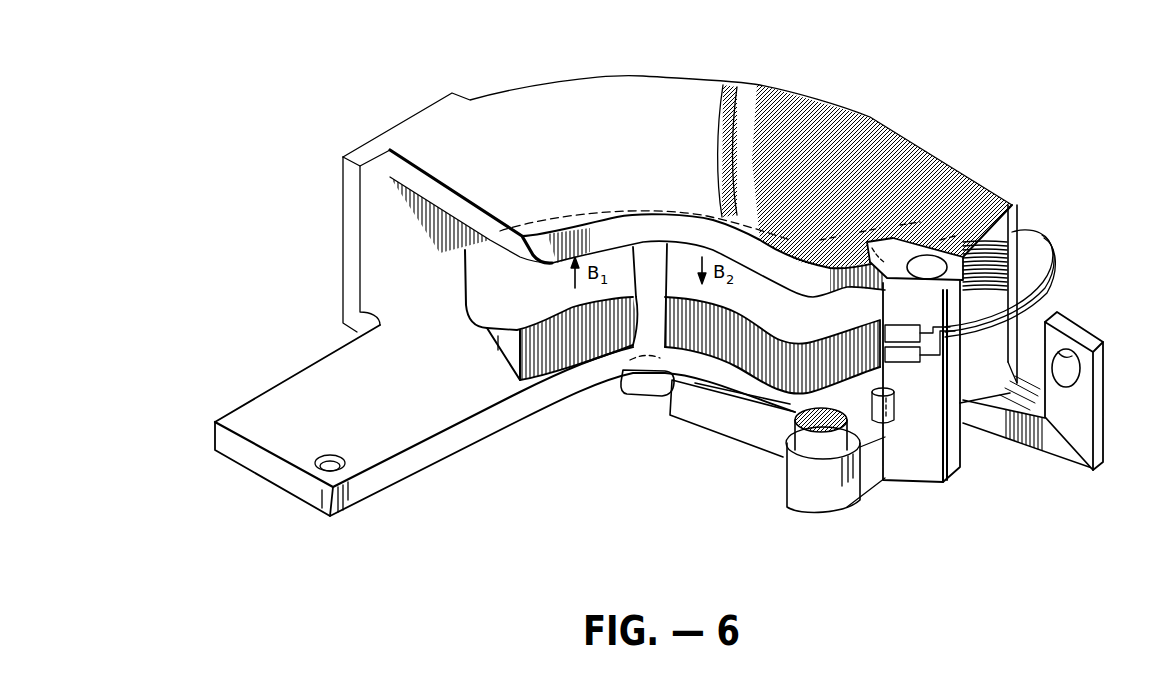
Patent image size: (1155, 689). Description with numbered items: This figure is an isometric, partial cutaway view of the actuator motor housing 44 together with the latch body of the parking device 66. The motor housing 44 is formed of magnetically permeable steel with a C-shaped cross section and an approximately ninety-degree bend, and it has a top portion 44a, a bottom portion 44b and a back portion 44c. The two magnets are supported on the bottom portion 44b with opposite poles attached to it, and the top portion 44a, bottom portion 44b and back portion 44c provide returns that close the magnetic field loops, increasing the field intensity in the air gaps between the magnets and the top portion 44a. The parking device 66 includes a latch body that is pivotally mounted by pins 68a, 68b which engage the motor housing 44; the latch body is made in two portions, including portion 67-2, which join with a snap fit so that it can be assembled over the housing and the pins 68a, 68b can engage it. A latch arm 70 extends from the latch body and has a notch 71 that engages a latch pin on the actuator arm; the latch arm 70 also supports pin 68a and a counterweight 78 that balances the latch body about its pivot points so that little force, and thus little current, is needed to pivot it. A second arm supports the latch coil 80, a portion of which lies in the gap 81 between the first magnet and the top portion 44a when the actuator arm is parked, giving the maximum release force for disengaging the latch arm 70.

The actuator motor housing 44 is at (445, 130).
The top portion 44a is at (412, 177).
The bottom portion 44b is at (262, 468).
The back portion 44c is at (343, 279).
The parking device 66 is at (1000, 454).
The latch body portion 67-2 is at (980, 304).
The pin 68a is at (880, 245).
The pin 68b is at (893, 422).
The latch arm 70 is at (713, 407).
The notch 71 is at (630, 402).
The counterweight 78 is at (822, 487).
The latch coil 80 is at (1013, 203).
The gap 81 is at (692, 258).